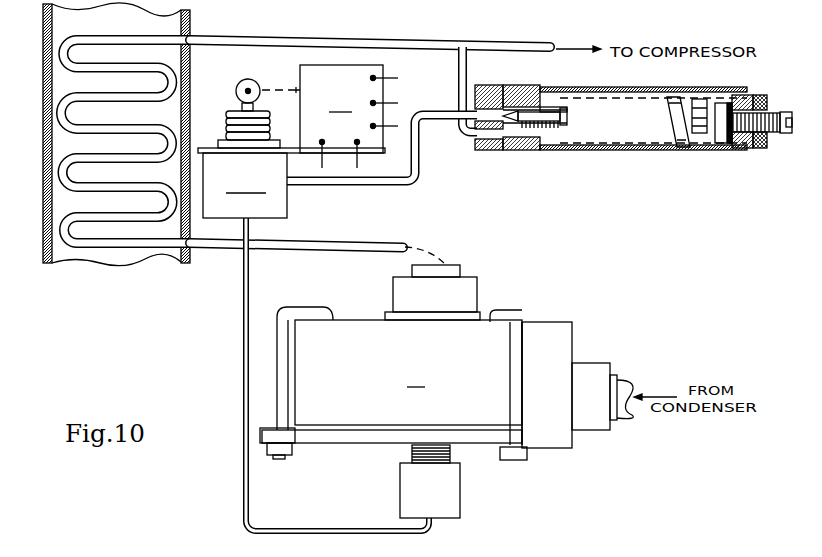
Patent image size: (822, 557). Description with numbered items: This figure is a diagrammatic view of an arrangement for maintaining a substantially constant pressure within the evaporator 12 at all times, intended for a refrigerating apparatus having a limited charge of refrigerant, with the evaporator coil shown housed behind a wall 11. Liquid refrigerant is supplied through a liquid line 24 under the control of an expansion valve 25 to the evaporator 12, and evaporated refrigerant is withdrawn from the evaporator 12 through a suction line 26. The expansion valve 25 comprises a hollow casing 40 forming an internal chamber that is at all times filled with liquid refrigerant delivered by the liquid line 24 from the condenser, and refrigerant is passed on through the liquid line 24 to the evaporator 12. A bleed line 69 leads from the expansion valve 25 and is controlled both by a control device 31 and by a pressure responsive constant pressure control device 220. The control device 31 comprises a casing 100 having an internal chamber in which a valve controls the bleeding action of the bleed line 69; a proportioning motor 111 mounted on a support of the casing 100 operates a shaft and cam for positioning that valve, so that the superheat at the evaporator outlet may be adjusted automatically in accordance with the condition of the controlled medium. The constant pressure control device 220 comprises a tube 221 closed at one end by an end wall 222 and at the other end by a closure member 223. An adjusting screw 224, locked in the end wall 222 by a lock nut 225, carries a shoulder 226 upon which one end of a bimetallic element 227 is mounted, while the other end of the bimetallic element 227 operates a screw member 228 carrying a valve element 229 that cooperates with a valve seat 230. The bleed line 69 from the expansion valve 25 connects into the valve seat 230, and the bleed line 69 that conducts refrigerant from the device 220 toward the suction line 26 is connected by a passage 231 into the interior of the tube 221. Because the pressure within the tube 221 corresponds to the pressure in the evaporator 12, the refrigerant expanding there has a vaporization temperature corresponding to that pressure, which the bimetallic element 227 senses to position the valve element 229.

The cabinet wall 11 is at (45, 88).
The evaporator 12 is at (110, 249).
The liquid line 24 is at (307, 248).
The expansion valve 25 is at (438, 391).
The suction line 26 is at (392, 27).
The control device 31 is at (309, 207).
The hollow casing 40 is at (408, 372).
The bleed line 69 is at (457, 77).
The casing 100 is at (245, 185).
The proportioning motor 111 is at (349, 116).
The constant pressure control device 220 is at (633, 133).
The tube 221 is at (621, 153).
The end wall 222 is at (748, 151).
The closure member 223 is at (488, 150).
The adjusting screw 224 is at (775, 134).
The lock nut 225 is at (760, 102).
The shoulder 226 is at (720, 151).
The bimetallic element 227 is at (690, 151).
The screw member 228 is at (545, 92).
The valve element 229 is at (526, 84).
The valve seat 230 is at (496, 86).
The passage 231 is at (507, 150).